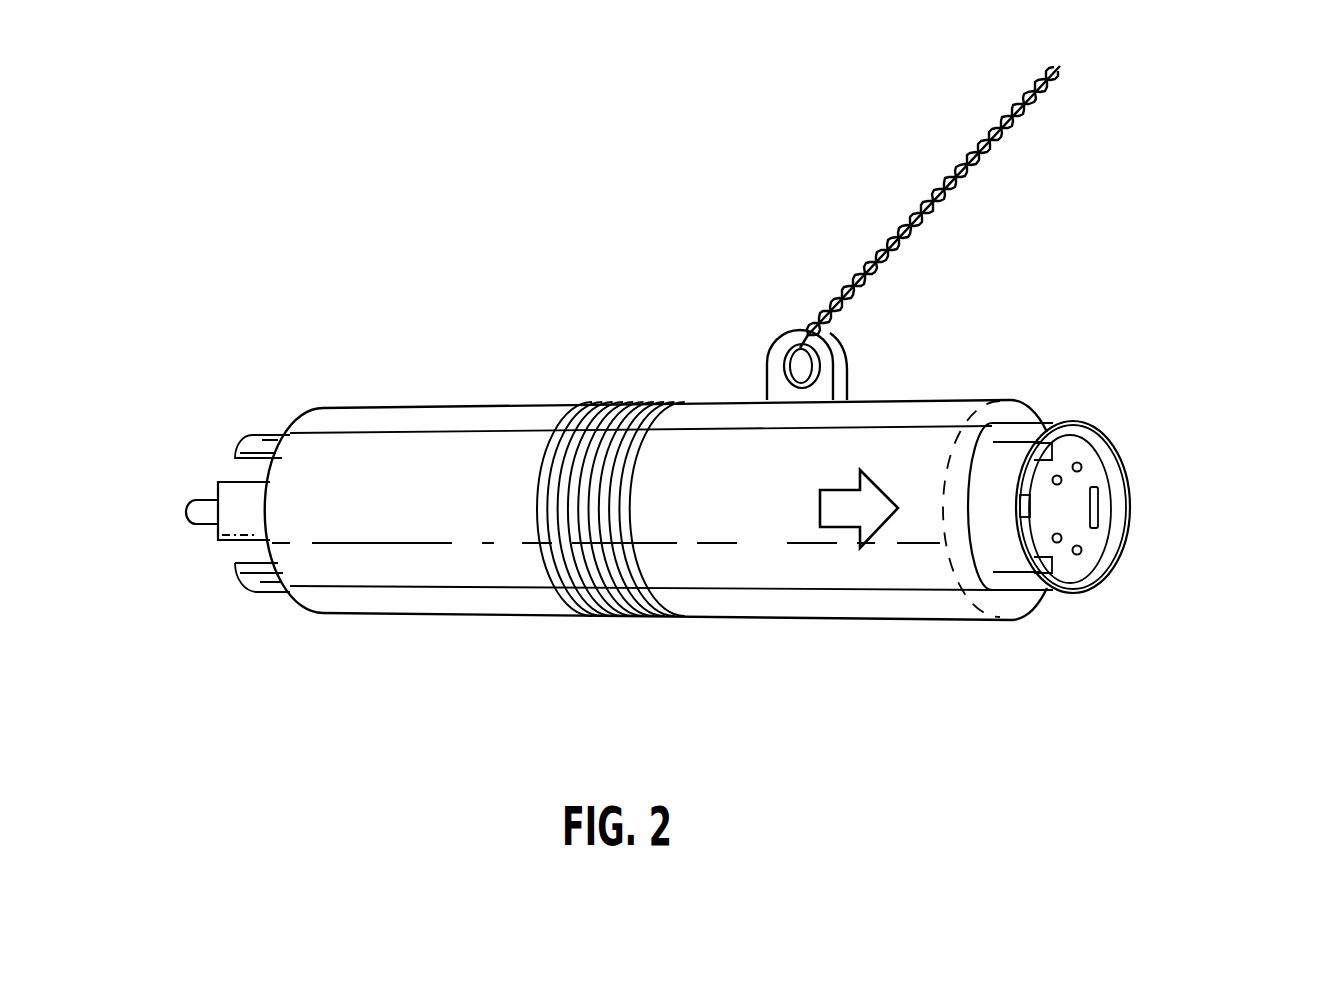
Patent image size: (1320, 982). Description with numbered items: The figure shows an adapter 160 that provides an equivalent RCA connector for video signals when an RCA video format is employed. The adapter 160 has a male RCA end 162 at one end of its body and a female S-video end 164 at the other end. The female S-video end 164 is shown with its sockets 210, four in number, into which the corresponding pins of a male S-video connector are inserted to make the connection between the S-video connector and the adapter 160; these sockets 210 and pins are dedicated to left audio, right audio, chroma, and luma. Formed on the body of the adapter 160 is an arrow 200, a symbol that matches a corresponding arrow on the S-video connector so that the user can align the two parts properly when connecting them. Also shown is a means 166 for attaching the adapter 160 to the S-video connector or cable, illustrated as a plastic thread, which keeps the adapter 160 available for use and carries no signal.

The adapter 160 is at (572, 324).
The male RCA end 162 is at (183, 512).
The female S-video end 164 is at (1095, 475).
The means for attaching 166 is at (952, 199).
The arrow 200 is at (842, 530).
The sockets 210 is at (1081, 470).